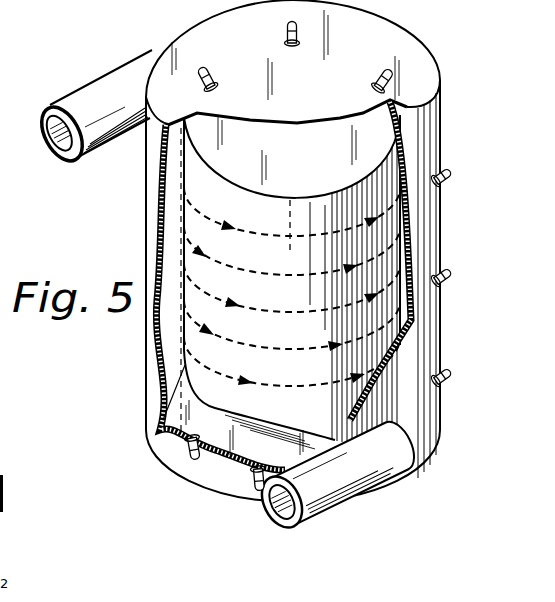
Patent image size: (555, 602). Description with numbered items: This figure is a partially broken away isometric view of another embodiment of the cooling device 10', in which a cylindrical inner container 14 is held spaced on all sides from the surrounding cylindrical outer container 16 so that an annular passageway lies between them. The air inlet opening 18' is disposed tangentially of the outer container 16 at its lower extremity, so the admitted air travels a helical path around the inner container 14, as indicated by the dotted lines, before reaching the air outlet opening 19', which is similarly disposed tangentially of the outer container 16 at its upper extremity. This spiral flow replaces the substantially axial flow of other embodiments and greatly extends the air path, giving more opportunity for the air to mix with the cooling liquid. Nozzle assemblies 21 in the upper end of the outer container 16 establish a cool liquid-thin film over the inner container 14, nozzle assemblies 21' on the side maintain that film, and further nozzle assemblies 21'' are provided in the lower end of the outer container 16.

The cooling device 10' is at (301, 273).
The cylindrical inner container 14 is at (314, 180).
The cylindrical outer container 16 is at (440, 127).
The air inlet opening 18' is at (332, 488).
The air outlet opening 19' is at (83, 111).
The nozzle assemblies 21 is at (284, 59).
The nozzle assemblies 21' is at (457, 280).
The nozzle assemblies 21'' is at (193, 479).